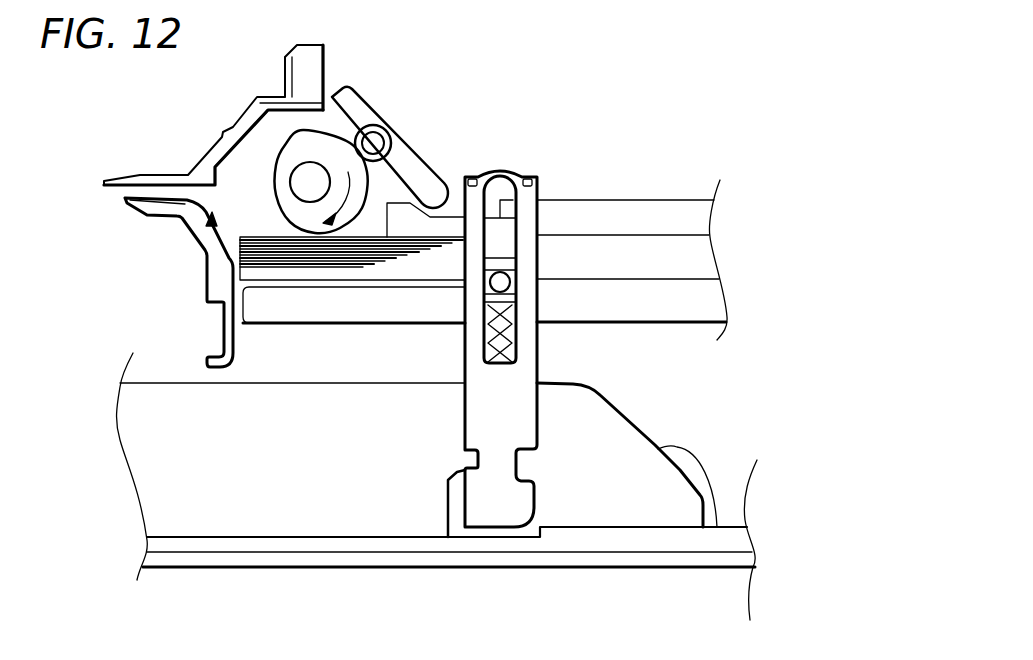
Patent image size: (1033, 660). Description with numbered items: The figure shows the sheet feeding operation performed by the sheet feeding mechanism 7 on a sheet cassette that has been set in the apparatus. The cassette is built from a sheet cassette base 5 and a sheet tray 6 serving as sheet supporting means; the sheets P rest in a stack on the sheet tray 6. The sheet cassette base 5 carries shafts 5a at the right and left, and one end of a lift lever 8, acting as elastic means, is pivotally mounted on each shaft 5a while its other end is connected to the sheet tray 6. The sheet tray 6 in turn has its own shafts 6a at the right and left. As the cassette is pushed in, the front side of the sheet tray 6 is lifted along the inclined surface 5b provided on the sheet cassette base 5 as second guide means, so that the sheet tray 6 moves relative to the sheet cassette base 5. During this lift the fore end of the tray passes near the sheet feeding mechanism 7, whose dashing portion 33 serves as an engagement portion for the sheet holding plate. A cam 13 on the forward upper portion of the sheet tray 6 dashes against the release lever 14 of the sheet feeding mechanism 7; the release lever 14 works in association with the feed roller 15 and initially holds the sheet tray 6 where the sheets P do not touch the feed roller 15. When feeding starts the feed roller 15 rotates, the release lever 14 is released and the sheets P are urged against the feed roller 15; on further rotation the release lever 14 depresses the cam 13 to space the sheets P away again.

The sheet cassette base 5 is at (215, 507).
The shafts 5a is at (507, 505).
The inclined surface 5b is at (717, 527).
The sheet tray 6 is at (385, 308).
The shafts 6a is at (505, 280).
The sheet feeding mechanism 7 is at (422, 24).
The lift lever 8 is at (522, 407).
The cam 13 is at (447, 225).
The release lever 14 is at (433, 187).
The feed roller 15 is at (325, 148).
The dashing portion 33 is at (210, 210).
The sheets P is at (630, 253).